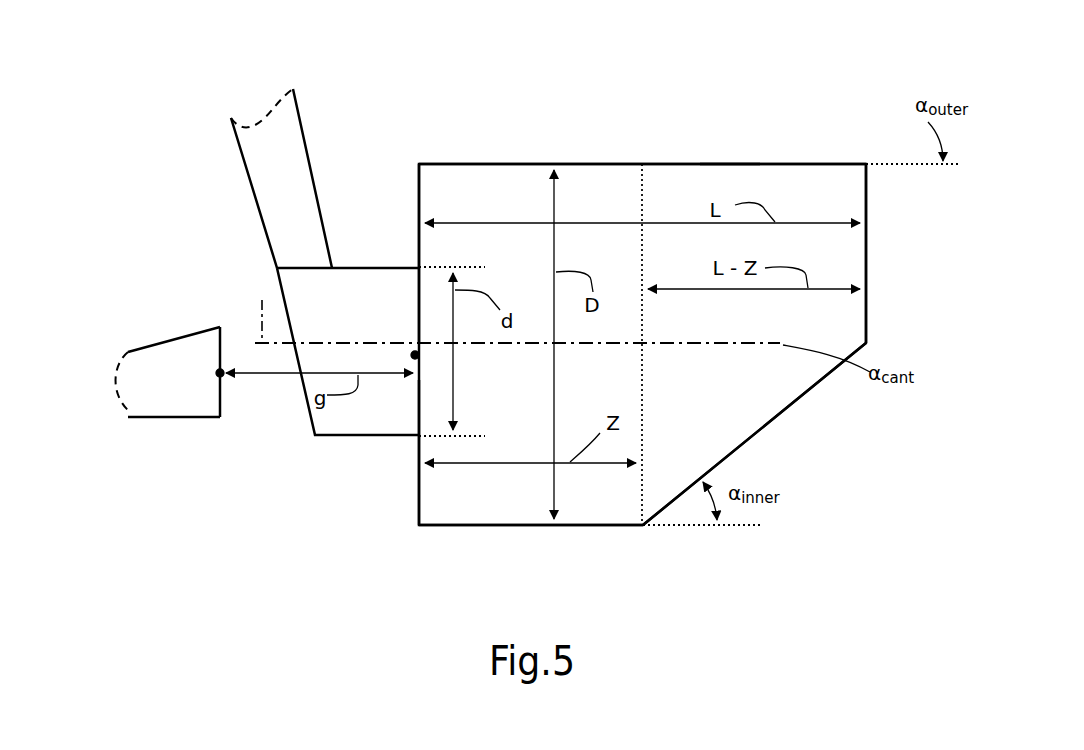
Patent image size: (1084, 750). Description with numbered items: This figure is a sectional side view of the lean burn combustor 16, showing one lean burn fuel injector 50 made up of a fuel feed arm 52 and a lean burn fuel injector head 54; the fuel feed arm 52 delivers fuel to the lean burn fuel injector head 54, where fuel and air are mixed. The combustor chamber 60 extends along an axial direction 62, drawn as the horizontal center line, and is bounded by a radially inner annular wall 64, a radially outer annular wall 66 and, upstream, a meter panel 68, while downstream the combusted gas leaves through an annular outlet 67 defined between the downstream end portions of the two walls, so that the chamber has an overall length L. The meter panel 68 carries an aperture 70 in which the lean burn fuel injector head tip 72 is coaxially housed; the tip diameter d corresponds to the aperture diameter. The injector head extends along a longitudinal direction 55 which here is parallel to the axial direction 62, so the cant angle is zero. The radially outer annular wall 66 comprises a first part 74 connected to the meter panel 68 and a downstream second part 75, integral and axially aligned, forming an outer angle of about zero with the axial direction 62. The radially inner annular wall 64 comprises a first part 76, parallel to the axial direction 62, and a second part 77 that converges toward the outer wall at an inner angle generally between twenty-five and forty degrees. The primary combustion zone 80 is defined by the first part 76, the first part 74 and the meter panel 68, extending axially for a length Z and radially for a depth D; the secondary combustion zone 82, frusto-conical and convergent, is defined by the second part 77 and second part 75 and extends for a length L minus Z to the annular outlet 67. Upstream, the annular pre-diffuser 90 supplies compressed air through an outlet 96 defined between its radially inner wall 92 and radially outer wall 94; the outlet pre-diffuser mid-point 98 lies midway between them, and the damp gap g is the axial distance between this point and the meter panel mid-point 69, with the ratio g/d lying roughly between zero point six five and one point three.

The lean burn combustor 16 is at (383, 35).
The lean burn fuel injector 50 is at (247, 282).
The fuel feed arm 52 is at (263, 195).
The lean burn fuel injector head 54 is at (338, 427).
The longitudinal direction 55 is at (262, 300).
The combustor chamber 60 is at (626, 84).
The axial direction 62 is at (747, 348).
The radially inner annular wall 64 is at (634, 553).
The radially outer annular wall 66 is at (678, 134).
The annular outlet 67 is at (866, 258).
The meter panel 68 is at (417, 497).
The meter panel mid-point 69 is at (413, 356).
The aperture 70 is at (422, 400).
The lean burn fuel injector head tip 72 is at (417, 310).
The first part of the radially outer annular wall 74 is at (525, 163).
The second part of the radially outer annular wall 75 is at (755, 163).
The first part of the radially inner annular wall 76 is at (493, 527).
The second part of the radially inner annular wall 77 is at (787, 408).
The primary combustion zone 80 is at (503, 413).
The secondary combustion zone 82 is at (706, 405).
The pre-diffuser 90 is at (152, 402).
The radially inner wall 92 is at (187, 420).
The radially outer wall 94 is at (177, 333).
The outlet 96 is at (225, 397).
The outlet pre-diffuser mid-point 98 is at (222, 370).